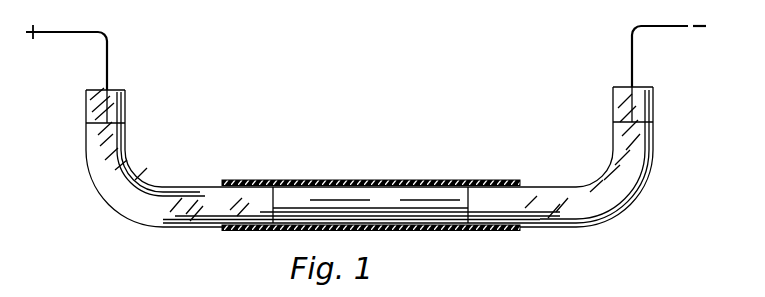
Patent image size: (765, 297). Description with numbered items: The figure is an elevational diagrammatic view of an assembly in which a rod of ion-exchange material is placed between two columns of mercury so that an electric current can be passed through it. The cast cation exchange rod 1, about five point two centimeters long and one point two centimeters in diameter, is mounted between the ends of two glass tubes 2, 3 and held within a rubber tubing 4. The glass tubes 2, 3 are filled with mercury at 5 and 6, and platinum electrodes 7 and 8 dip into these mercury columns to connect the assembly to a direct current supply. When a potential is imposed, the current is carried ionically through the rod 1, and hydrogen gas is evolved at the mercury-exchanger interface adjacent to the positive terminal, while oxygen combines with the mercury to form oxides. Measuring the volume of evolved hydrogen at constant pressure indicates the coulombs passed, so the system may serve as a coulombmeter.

The cation exchange rod 1 is at (431, 197).
The glass tube 2 is at (92, 103).
The glass tube 3 is at (640, 105).
The rubber tubing 4 is at (350, 180).
The mercury 5 is at (88, 131).
The mercury 6 is at (622, 124).
The platinum electrode 7 is at (110, 78).
The platinum electrode 8 is at (632, 68).